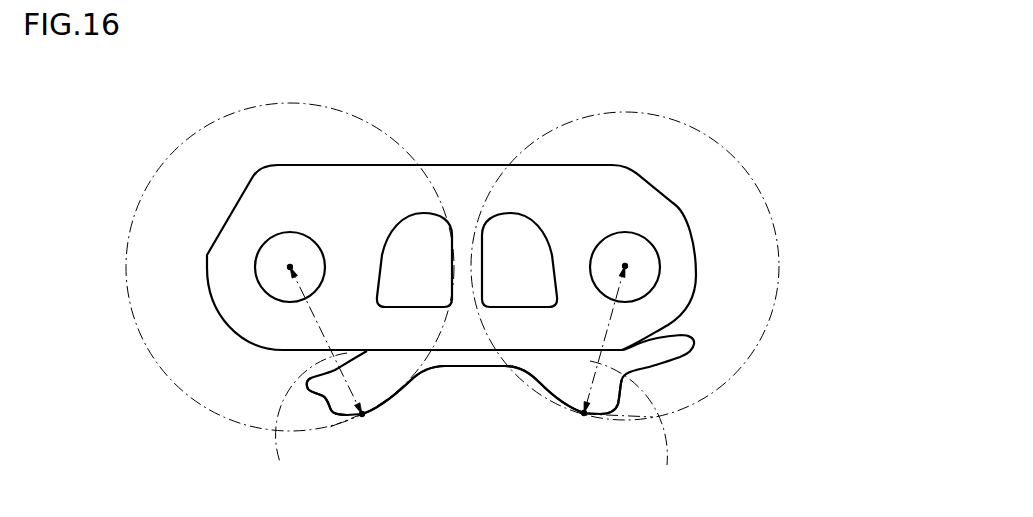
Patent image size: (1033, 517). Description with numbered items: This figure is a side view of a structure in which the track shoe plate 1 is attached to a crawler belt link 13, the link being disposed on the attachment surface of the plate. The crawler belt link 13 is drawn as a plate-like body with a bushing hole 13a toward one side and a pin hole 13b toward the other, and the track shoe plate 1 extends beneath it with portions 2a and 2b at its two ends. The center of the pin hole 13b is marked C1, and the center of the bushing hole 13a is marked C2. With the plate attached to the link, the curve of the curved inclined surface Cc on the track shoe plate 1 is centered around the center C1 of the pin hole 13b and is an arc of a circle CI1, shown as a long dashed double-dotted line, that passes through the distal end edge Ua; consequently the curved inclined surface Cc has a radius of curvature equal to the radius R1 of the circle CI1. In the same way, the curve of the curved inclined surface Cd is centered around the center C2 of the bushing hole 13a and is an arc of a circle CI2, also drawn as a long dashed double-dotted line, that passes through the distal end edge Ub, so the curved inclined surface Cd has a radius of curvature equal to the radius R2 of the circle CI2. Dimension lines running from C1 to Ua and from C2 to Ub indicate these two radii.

The track shoe plate 1 is at (680, 350).
The crawler belt link 13 is at (472, 163).
The bushing hole 13a is at (264, 243).
The pin hole 13b is at (651, 242).
The center of pin hole C1 is at (625, 262).
The center of bushing hole C2 is at (290, 262).
The circle CI1 is at (730, 150).
The circle CI2 is at (173, 148).
The distal end edge Ua is at (580, 415).
The distal end edge Ub is at (364, 415).
The right leg portion 2a is at (608, 398).
The left leg portion 2b is at (338, 400).
The curved inclined surface Cc is at (540, 393).
The curved inclined surface Cd is at (400, 392).
The radius R1 is at (635, 426).
The radius R2 is at (305, 422).